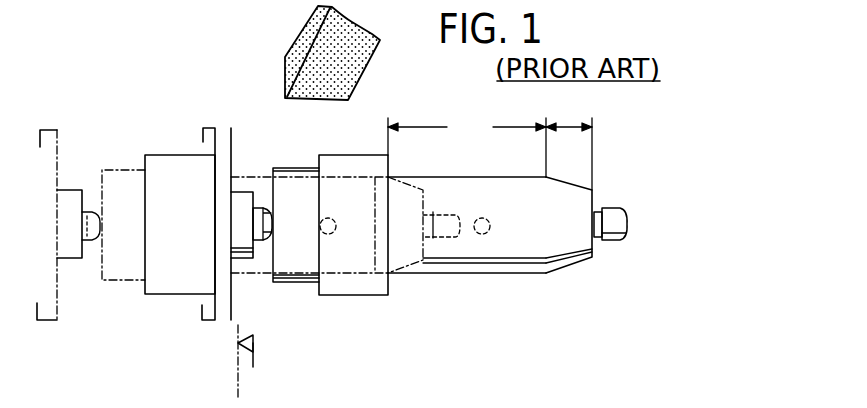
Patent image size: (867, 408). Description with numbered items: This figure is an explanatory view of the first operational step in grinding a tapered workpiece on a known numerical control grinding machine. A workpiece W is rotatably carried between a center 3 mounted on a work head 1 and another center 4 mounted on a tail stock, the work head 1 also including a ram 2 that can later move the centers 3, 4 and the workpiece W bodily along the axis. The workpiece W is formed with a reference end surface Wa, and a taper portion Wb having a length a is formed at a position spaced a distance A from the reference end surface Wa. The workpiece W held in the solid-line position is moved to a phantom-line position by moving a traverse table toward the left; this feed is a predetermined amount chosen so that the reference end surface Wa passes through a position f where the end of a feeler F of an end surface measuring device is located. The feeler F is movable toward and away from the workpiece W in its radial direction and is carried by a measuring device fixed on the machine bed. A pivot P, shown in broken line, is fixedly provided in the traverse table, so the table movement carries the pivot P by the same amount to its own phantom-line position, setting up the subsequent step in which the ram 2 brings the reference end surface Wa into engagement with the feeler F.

The work head 1 is at (53, 147).
The ram 2 is at (240, 197).
The center 3 is at (275, 221).
The center 4 is at (615, 217).
The workpiece W is at (135, 285).
The reference end surface Wa is at (233, 287).
The taper portion Wb is at (565, 248).
The pivot P is at (335, 222).
The distance A is at (467, 146).
The length a is at (569, 146).
The position f is at (237, 332).
The feeler F is at (252, 340).